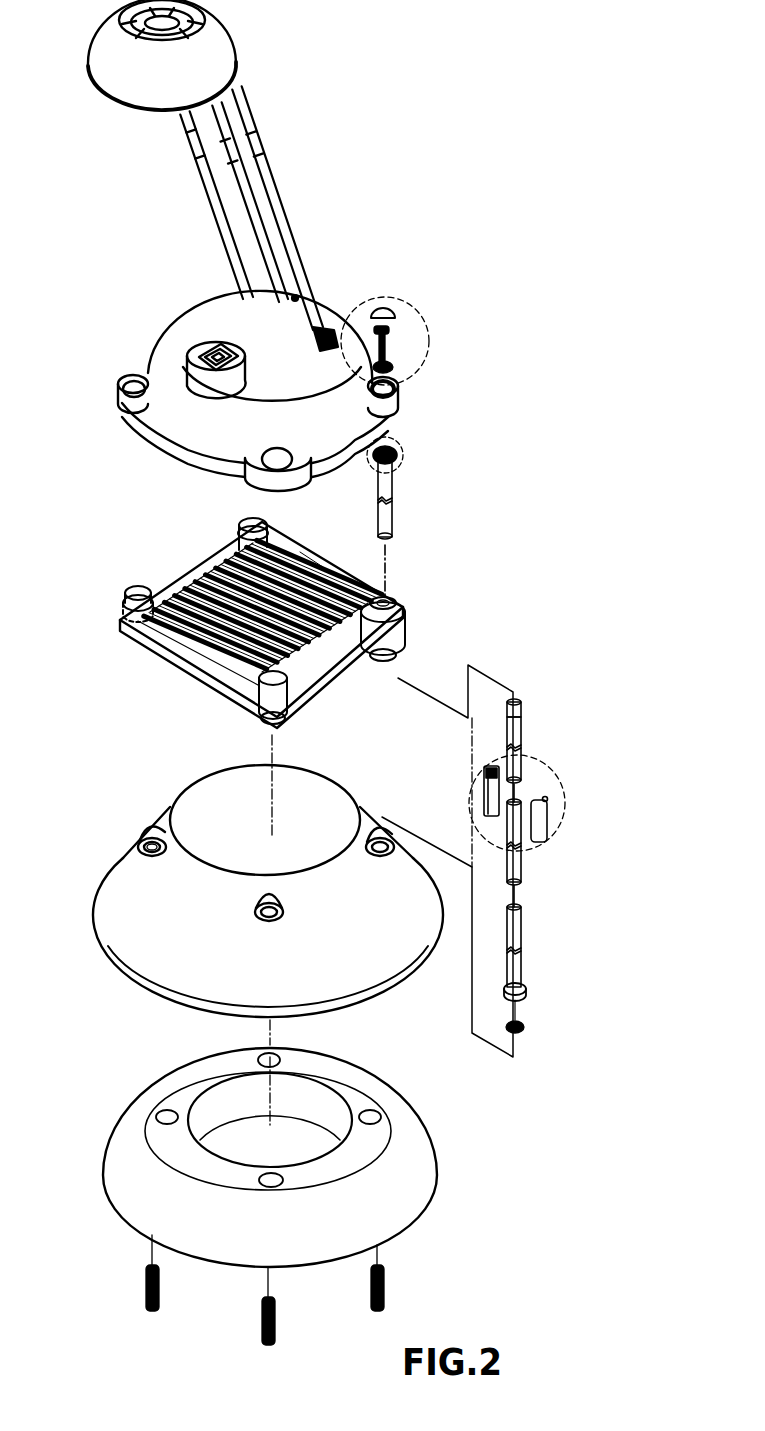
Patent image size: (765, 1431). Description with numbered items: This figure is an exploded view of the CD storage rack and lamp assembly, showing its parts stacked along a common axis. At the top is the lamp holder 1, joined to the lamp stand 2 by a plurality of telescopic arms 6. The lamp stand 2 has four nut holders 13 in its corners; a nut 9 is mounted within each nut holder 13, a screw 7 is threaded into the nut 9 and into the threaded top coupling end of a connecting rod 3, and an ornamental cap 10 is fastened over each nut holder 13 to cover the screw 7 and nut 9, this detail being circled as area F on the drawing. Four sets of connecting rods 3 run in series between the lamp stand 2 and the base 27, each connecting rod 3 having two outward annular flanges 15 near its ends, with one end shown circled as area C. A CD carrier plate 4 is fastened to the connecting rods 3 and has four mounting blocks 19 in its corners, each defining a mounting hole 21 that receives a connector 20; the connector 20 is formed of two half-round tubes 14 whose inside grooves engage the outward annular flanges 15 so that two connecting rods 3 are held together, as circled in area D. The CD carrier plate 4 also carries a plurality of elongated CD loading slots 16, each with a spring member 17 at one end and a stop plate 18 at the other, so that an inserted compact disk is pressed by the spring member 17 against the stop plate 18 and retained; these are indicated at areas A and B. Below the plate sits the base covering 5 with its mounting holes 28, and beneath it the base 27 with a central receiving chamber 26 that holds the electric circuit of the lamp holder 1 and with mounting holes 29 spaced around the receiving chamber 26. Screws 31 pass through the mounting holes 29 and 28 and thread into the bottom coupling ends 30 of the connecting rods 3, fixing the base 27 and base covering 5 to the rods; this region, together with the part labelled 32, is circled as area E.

The lamp holder 1 is at (208, 68).
The lamp stand 2 is at (202, 327).
The connecting rods 3 is at (390, 487).
The CD carrier plates 4 is at (227, 623).
The base covering 5 is at (234, 925).
The telescopic arms 6 is at (267, 188).
The screw 7 is at (386, 340).
The nut 9 is at (393, 367).
The ornamental cap 10 is at (390, 300).
The nut holders 13 is at (397, 393).
The half-round tubes 14 is at (497, 792).
The outward annular flanges 15 is at (520, 712).
The CD loading slots 16 is at (210, 593).
The spring member 17 is at (289, 565).
The stop plate 18 is at (122, 617).
The mounting blocks 19 is at (393, 632).
The connector 20 is at (490, 840).
The mounting hole 21 is at (393, 597).
The receiving chamber 26 is at (238, 1092).
The base 27 is at (303, 1145).
The mounting holes 28 is at (136, 847).
The mounting holes 29 is at (163, 1110).
The bottom coupling ends 30 is at (528, 997).
The screws 31 is at (384, 1310).
The nut 32 is at (525, 1031).
The detail A is at (120, 597).
The detail B is at (330, 565).
The detail C is at (407, 452).
The detail D is at (567, 812).
The detail E is at (530, 988).
The detail F is at (433, 338).